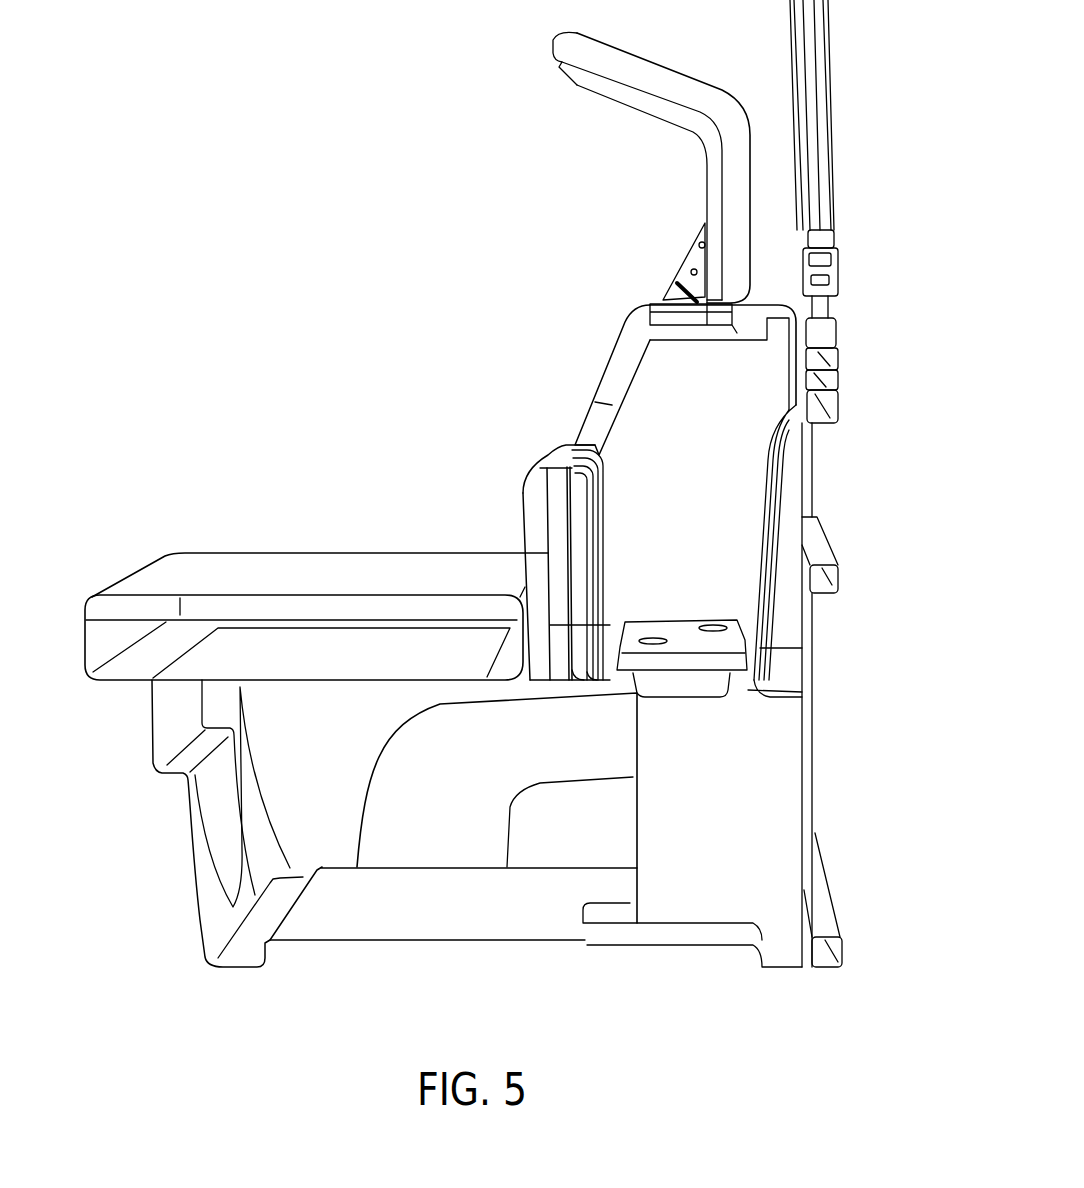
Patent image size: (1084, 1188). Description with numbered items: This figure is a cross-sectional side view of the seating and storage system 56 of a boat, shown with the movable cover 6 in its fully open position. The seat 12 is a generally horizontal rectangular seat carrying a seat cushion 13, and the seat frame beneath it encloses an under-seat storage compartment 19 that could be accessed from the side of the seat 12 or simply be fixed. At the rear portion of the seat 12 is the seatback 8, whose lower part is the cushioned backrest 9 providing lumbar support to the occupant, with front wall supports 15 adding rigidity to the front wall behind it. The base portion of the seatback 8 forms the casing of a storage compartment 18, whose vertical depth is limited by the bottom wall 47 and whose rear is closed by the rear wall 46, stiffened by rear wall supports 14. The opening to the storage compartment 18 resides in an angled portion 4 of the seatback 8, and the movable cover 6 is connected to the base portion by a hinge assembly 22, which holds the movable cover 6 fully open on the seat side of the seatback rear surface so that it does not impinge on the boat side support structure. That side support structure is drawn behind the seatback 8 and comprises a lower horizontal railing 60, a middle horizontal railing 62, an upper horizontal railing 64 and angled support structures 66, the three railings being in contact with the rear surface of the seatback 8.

The seating and storage system 56 is at (308, 230).
The movable cover 6 is at (672, 82).
The angled support structures 66 is at (827, 132).
The hinge assembly 22 is at (683, 273).
The angled portion 4 is at (613, 358).
The storage compartment 18 is at (690, 420).
The front wall supports 15 is at (578, 493).
The seatback 8 is at (540, 465).
The cushioned backrest 9 is at (532, 503).
The seat cushion 13 is at (263, 565).
The seat 12 is at (180, 657).
The upper horizontal railing 64 is at (835, 410).
The rear wall supports 14 is at (790, 445).
The rear wall 46 is at (803, 483).
The middle horizontal railing 62 is at (835, 577).
The bottom wall 47 is at (705, 642).
The under-seat storage compartment 19 is at (383, 808).
The lower horizontal railing 60 is at (827, 925).